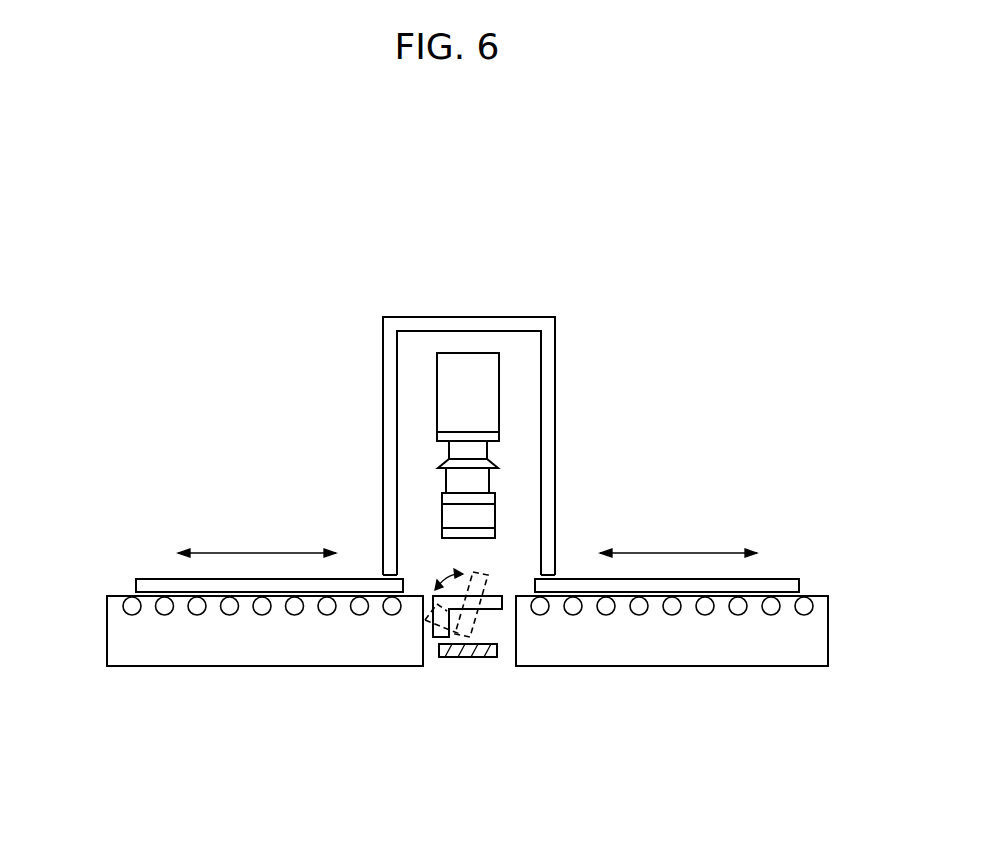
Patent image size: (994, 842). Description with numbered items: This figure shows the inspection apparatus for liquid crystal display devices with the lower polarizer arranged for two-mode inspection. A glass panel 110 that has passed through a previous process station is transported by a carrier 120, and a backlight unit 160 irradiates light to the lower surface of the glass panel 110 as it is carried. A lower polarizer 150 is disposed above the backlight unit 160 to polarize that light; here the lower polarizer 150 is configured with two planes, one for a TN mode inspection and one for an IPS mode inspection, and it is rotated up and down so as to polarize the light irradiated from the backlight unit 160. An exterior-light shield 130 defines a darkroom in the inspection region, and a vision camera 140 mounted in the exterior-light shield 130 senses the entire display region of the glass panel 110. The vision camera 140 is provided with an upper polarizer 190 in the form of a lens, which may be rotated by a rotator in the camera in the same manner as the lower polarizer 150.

The glass panel 110 is at (150, 584).
The carrier 120 is at (125, 637).
The exterior-light shield 130 is at (418, 324).
The vision camera 140 is at (488, 383).
The lower polarizer 150 is at (490, 603).
The backlight unit 160 is at (468, 657).
The upper polarizer 190 is at (478, 529).